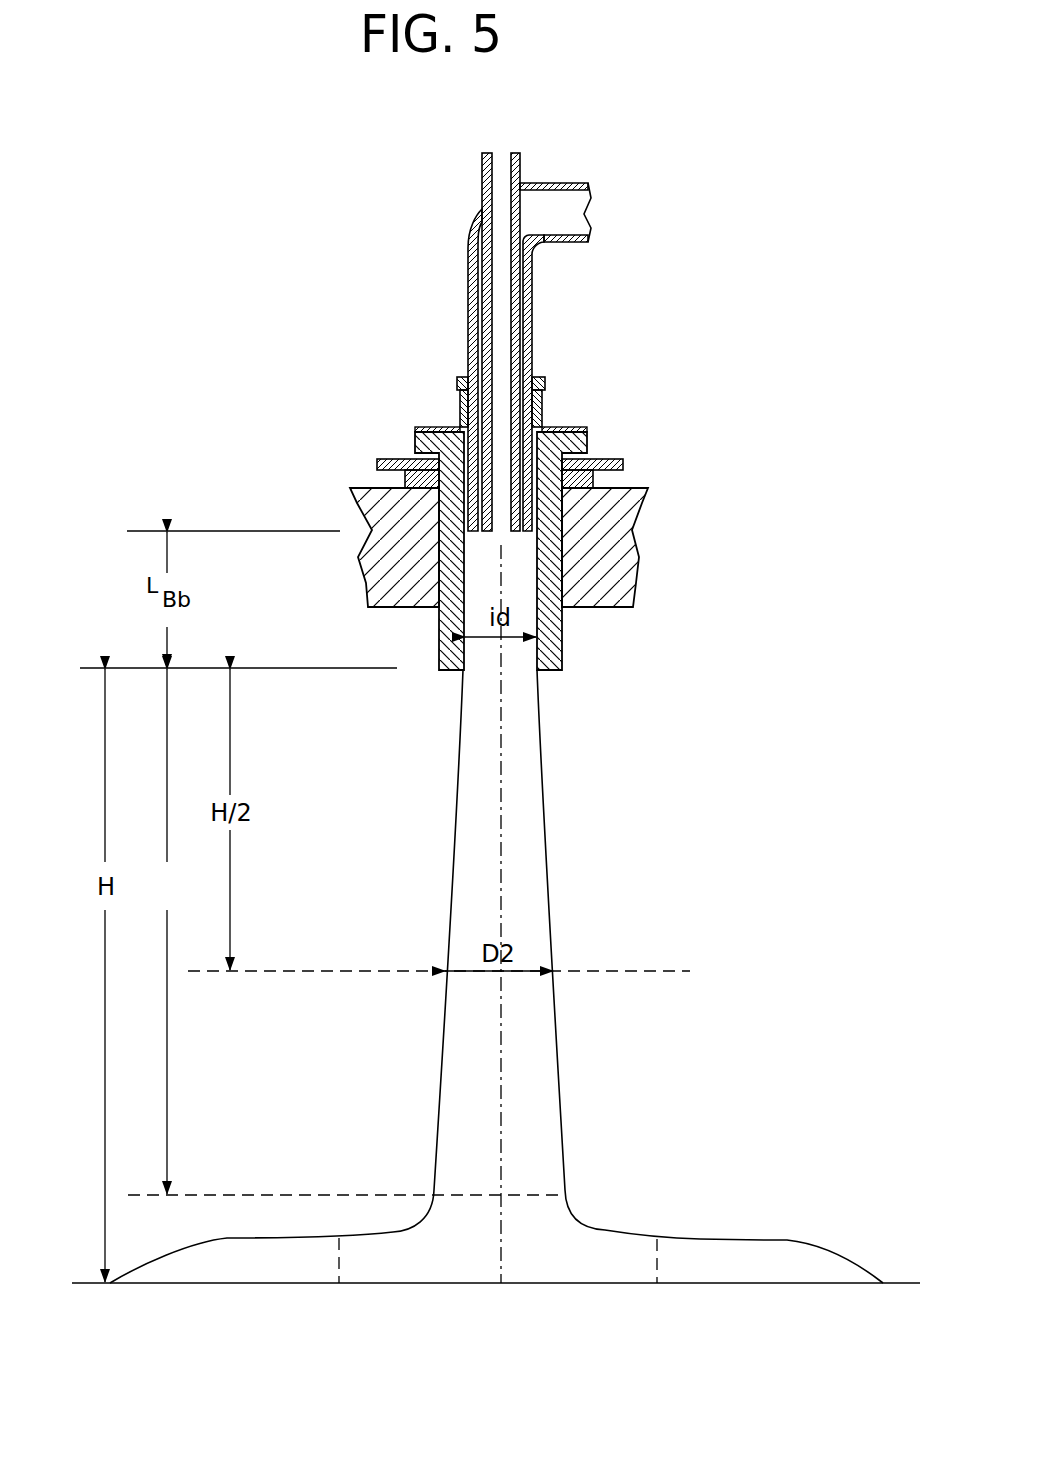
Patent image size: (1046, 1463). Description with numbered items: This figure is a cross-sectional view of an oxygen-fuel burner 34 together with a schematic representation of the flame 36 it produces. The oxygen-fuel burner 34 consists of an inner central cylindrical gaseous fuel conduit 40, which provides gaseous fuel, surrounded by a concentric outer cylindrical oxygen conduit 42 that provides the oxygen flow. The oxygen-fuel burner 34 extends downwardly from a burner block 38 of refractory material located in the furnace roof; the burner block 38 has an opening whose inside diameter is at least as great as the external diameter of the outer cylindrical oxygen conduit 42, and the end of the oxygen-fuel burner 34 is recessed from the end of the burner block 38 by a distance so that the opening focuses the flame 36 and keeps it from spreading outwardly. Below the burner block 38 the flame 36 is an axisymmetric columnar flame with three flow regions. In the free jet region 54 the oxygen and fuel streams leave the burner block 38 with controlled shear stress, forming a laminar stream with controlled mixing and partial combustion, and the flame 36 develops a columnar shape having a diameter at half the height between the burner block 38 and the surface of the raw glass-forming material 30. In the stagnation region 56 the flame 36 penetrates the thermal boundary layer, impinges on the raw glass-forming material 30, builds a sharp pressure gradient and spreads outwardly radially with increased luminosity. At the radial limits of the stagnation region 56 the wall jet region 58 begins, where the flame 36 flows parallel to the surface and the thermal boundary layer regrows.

The raw glass-forming material 30 is at (897, 1283).
The oxygen-fuel burner 34 is at (533, 311).
The flame 36 is at (548, 827).
The burner block 38 is at (566, 527).
The inner central cylindrical gaseous fuel conduit 40 is at (498, 167).
The outer cylindrical oxygen conduit 42 is at (576, 213).
The free jet region 54 is at (165, 931).
The stagnation region 56 is at (580, 1250).
The wall jet region 58 is at (704, 1261).